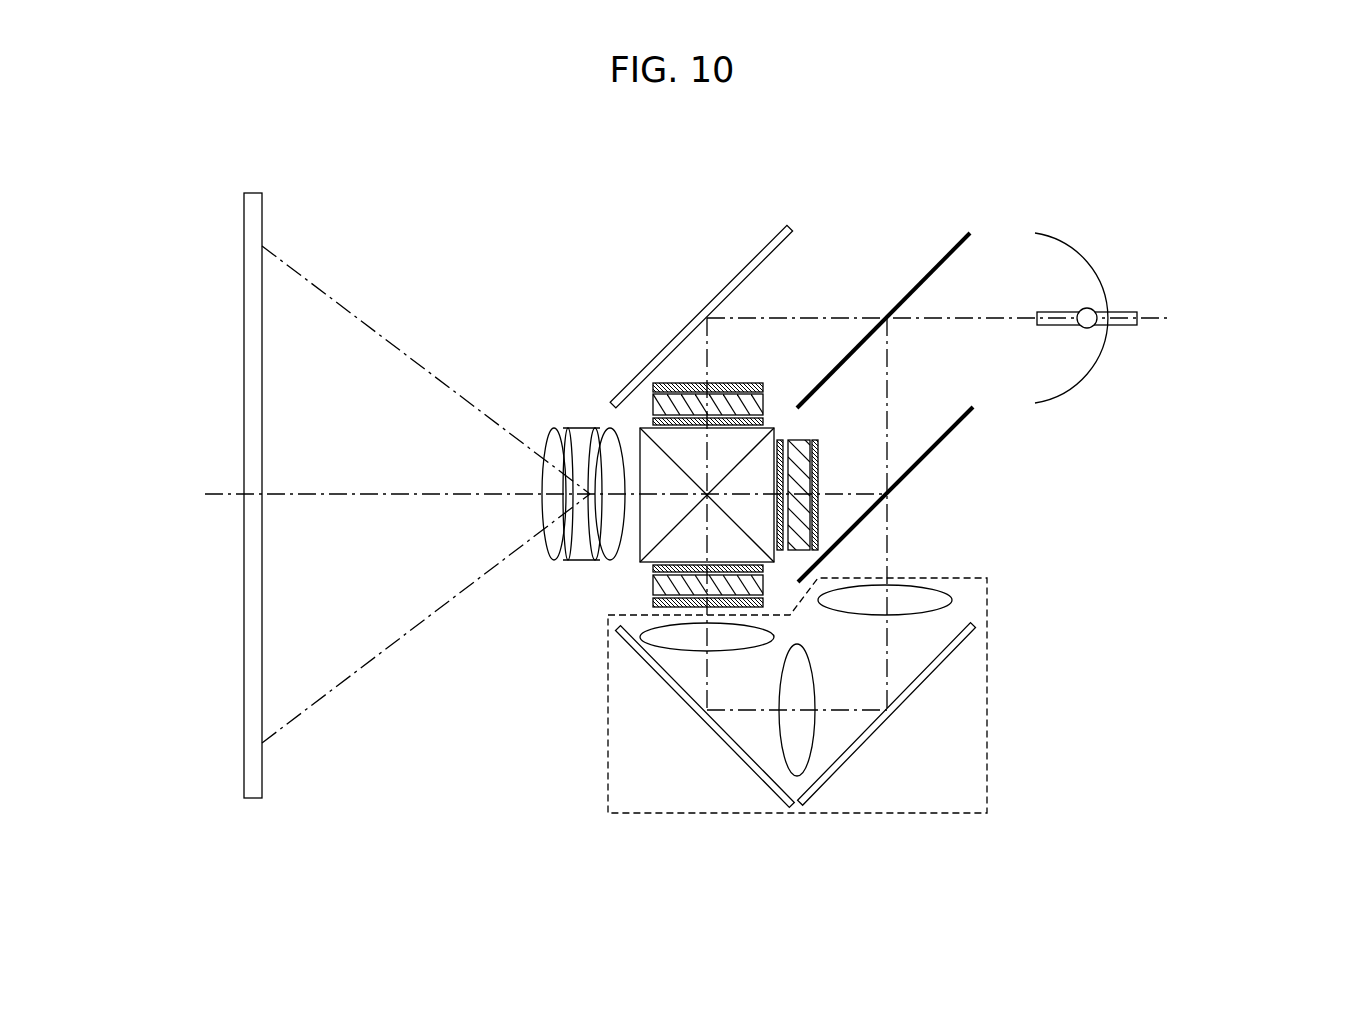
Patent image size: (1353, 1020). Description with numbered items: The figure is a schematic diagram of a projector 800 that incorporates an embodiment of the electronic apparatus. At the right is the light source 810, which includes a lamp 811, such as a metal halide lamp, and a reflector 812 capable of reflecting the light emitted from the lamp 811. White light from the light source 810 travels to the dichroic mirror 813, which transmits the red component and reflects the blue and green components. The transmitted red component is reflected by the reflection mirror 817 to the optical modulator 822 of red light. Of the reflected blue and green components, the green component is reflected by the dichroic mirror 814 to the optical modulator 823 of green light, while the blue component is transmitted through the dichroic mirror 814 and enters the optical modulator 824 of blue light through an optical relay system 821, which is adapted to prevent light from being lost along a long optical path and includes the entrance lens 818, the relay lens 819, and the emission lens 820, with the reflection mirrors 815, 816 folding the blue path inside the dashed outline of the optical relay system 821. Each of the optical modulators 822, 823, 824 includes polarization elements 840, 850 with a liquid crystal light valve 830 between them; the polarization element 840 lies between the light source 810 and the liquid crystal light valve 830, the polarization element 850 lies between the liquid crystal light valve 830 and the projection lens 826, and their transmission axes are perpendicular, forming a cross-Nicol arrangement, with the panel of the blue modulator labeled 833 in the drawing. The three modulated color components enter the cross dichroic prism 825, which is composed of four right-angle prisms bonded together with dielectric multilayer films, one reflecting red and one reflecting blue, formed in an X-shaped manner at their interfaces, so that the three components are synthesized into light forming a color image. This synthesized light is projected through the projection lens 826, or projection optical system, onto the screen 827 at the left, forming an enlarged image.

The projector 800 is at (1030, 156).
The light source 810 is at (1097, 292).
The lamp 811 is at (1080, 308).
The reflector 812 is at (1097, 267).
The dichroic mirror 813 is at (940, 263).
The dichroic mirror 814 is at (938, 440).
The reflection mirror 815 is at (867, 740).
The reflection mirror 816 is at (725, 742).
The reflection mirror 817 is at (748, 262).
The entrance lens 818 is at (923, 592).
The relay lens 819 is at (802, 673).
The emission lens 820 is at (743, 641).
The optical relay system 821 is at (990, 712).
The optical modulator 822 is at (680, 312).
The optical modulator 823 is at (828, 434).
The optical modulator 824 is at (640, 596).
The cross dichroic prism 825 is at (767, 423).
The projection lens 826 is at (628, 565).
The screen 827 is at (250, 192).
The liquid crystal light valve 830 is at (651, 402).
The liquid crystal panel 833 is at (767, 592).
The polarization element 840 is at (666, 383).
The polarization element 850 is at (648, 421).